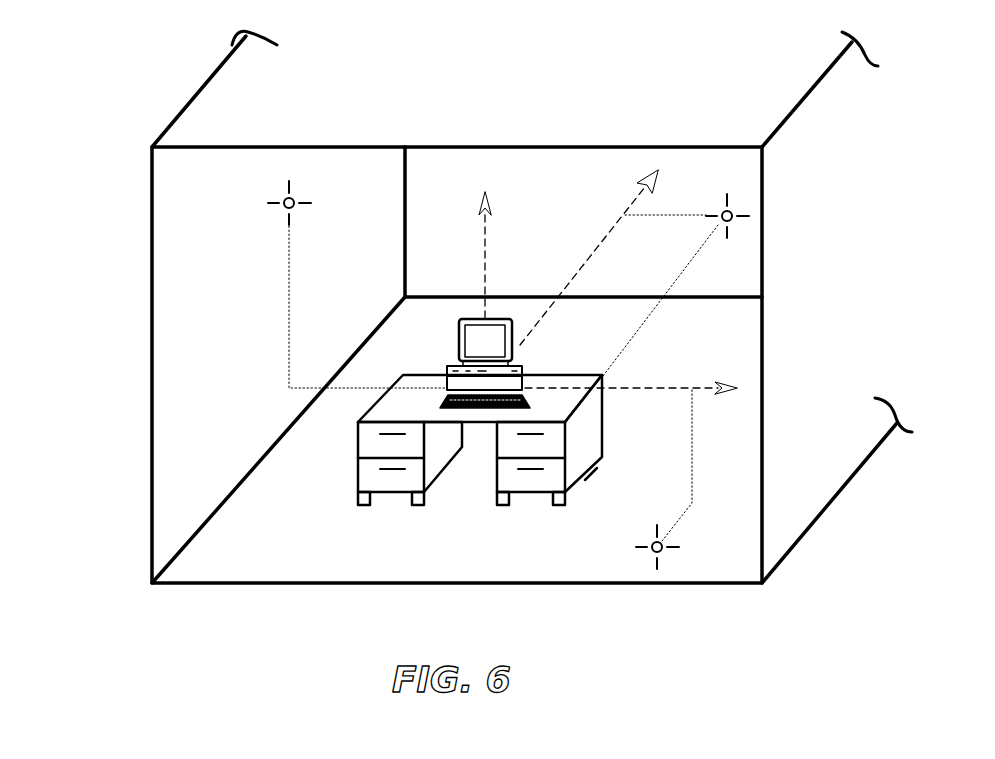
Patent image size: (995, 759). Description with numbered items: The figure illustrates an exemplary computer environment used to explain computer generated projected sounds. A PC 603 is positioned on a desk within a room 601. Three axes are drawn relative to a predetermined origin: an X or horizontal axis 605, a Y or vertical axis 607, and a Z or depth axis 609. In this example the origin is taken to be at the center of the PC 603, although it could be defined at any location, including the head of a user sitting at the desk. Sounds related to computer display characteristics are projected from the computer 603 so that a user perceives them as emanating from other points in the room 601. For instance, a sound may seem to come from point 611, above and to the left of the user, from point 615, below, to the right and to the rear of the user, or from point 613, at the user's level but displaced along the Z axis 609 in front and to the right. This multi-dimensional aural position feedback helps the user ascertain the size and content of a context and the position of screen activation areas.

The room 601 is at (152, 300).
The PC 603 is at (458, 353).
The horizontal axis 605 is at (643, 388).
The vertical axis 607 is at (483, 247).
The depth axis 609 is at (602, 238).
The point 611 is at (285, 212).
The point 613 is at (730, 192).
The point 615 is at (635, 548).